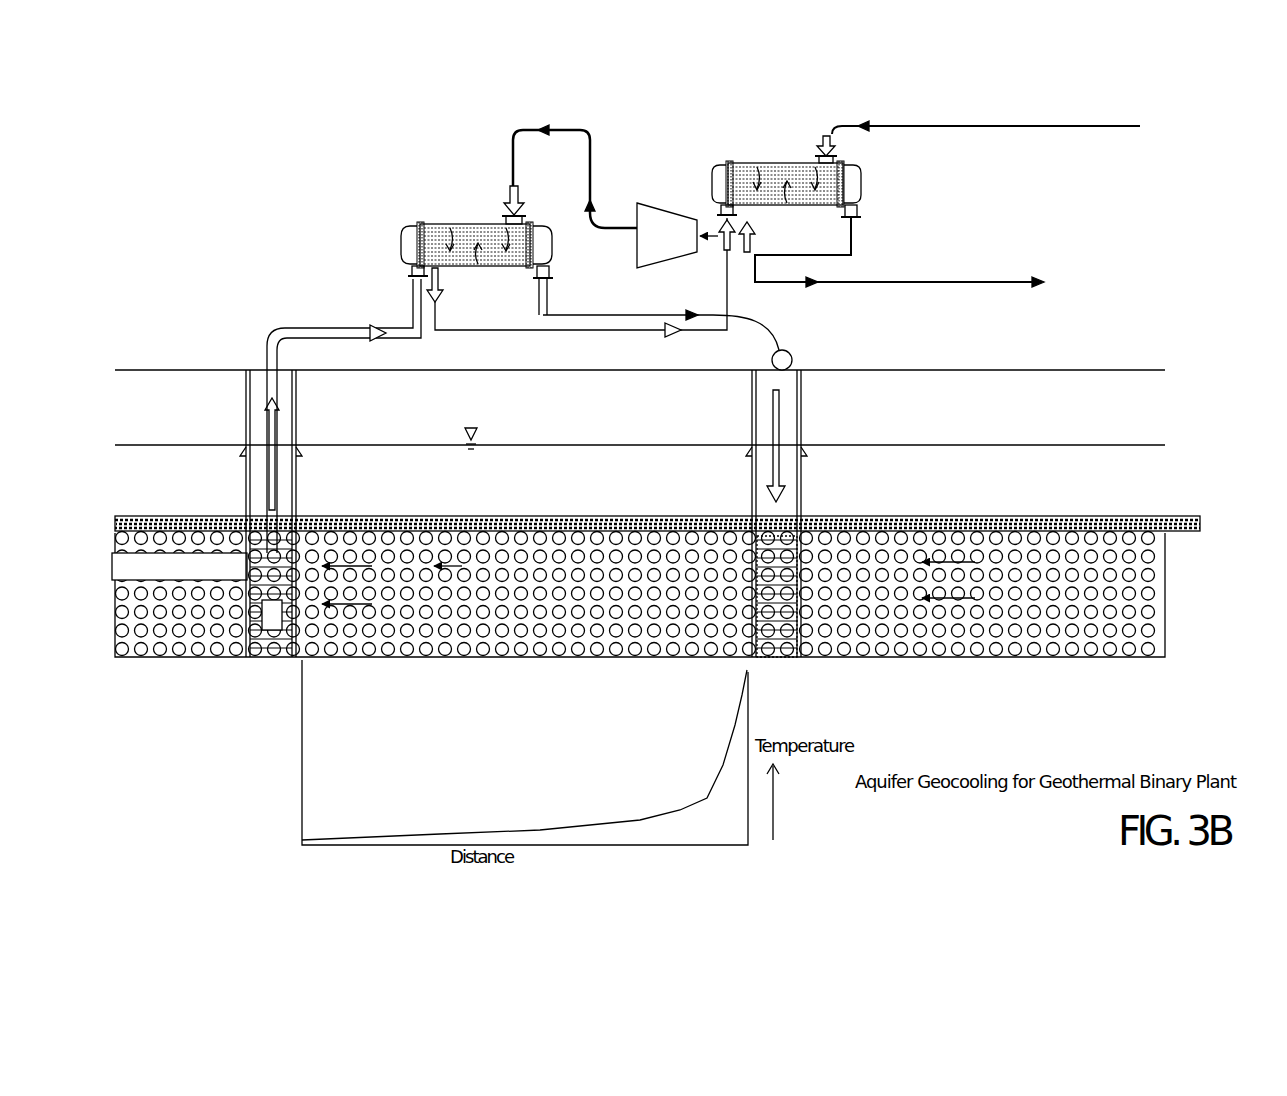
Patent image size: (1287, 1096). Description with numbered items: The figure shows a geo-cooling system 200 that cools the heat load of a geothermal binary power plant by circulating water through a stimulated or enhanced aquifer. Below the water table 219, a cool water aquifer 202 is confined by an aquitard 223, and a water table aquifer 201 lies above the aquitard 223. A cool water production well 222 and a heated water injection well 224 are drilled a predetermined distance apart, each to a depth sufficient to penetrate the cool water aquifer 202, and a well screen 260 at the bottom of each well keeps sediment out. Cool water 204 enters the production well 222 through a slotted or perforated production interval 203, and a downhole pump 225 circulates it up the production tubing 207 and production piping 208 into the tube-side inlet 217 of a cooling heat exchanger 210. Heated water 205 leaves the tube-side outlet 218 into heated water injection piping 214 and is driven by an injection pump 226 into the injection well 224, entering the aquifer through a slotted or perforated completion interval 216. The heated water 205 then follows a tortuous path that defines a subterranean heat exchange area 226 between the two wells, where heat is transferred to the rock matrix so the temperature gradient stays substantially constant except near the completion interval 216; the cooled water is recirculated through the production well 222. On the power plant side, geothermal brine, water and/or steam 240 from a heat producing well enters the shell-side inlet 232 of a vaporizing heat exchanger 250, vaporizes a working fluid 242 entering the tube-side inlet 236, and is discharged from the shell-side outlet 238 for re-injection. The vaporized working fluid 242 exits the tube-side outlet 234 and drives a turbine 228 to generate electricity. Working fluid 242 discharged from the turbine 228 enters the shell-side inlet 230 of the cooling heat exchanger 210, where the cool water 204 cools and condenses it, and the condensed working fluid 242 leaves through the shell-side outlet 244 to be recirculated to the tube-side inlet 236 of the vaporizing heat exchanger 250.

The geo-cooling system 200 is at (188, 228).
The water table aquifer 201 is at (647, 493).
The cool water aquifer 202 is at (108, 780).
The production interval 203 is at (138, 566).
The cool water 204 is at (278, 468).
The heated water 205 is at (800, 432).
The production tubing 207 is at (286, 410).
The production piping 208 is at (258, 333).
The cooling heat exchanger 210 is at (494, 225).
The heated water injection piping 214 is at (768, 330).
The completion interval 216 is at (800, 604).
The tube-side inlet 217 is at (410, 277).
The tube-side outlet 218 is at (550, 282).
The water table 219 is at (640, 434).
The cool water production well 222 is at (244, 487).
The aquitard 223 is at (478, 515).
The heated water injection well 224 is at (812, 494).
The downhole pump 225 is at (262, 640).
The injection pump 226 is at (793, 358).
The turbine 228 is at (677, 235).
The shell-side inlet 230 is at (506, 184).
The shell-side inlet 232 is at (860, 178).
The tube-side outlet 234 is at (856, 224).
The tube-side inlet 236 is at (712, 203).
The shell-side outlet 238 is at (780, 258).
The geothermal brine, water and/or steam 240 is at (932, 179).
The working fluid 242 is at (594, 192).
The shell-side outlet 244 is at (468, 335).
The vaporizing heat exchanger 250 is at (855, 170).
The well screen 260 is at (290, 660).